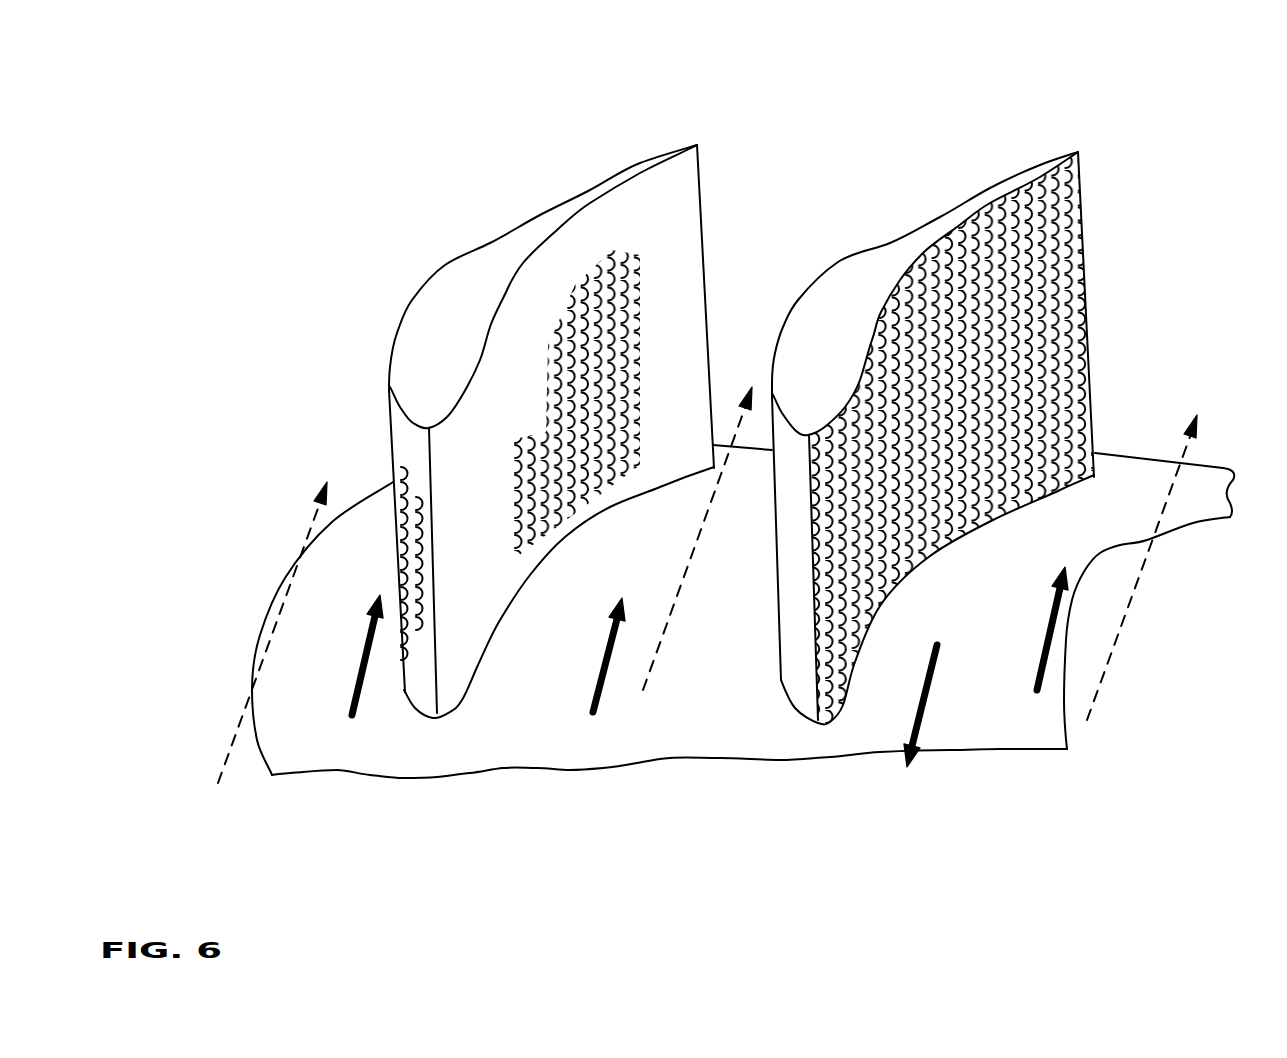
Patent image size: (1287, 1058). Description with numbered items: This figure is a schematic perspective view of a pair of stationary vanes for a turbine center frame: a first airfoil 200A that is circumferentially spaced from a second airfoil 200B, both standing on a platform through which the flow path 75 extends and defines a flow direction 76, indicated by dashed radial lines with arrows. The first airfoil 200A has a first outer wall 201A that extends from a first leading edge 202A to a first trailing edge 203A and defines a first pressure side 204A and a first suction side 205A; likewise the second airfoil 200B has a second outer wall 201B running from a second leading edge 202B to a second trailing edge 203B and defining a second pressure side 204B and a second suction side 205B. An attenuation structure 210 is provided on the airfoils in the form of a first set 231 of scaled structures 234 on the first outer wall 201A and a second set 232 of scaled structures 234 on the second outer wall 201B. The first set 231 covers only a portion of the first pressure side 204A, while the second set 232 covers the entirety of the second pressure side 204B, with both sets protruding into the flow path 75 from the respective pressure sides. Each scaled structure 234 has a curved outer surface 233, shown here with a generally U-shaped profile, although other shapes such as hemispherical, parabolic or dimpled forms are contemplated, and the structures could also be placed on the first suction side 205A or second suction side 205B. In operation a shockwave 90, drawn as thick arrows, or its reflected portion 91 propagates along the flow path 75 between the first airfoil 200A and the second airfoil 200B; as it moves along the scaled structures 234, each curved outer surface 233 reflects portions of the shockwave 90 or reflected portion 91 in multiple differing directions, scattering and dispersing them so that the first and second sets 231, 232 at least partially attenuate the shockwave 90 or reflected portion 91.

The first airfoil 200A is at (785, 441).
The second airfoil 200B is at (964, 464).
The first outer wall 201A is at (587, 190).
The second outer wall 201B is at (988, 192).
The first leading edge 202A is at (438, 690).
The second leading edge 202B is at (820, 693).
The first trailing edge 203A is at (702, 212).
The second trailing edge 203B is at (1086, 215).
The first pressure side 204A is at (455, 688).
The second pressure side 204B is at (843, 693).
The first suction side 205A is at (425, 690).
The second suction side 205B is at (807, 693).
The attenuation structure 210 is at (558, 343).
The first set of scaled structures 231 is at (570, 296).
The second set of scaled structures 232 is at (1058, 401).
The curved outer surface 233 is at (650, 309).
The scaled structures 234 is at (648, 301).
The flow path 75 is at (366, 455).
The flow direction 76 is at (240, 727).
The shockwave 90 is at (360, 674).
The reflected portion 91 is at (918, 698).